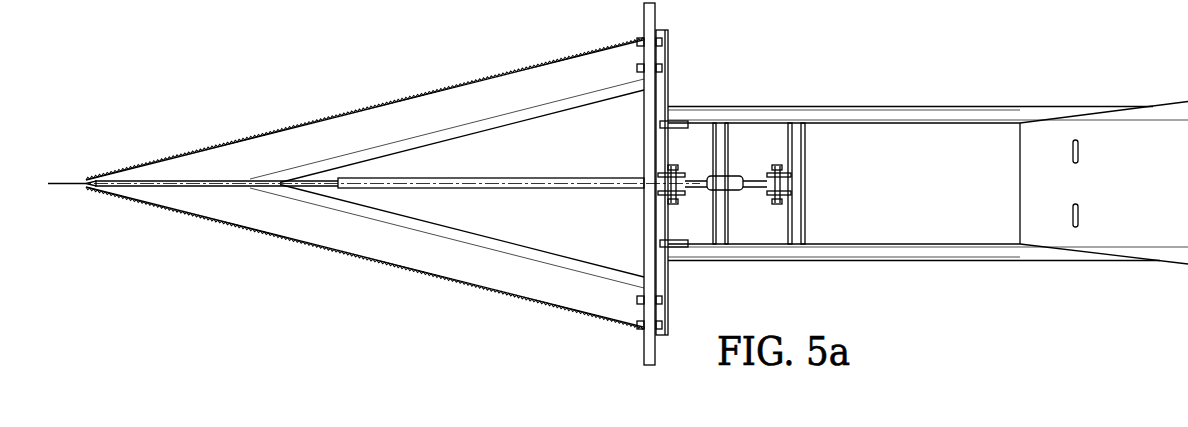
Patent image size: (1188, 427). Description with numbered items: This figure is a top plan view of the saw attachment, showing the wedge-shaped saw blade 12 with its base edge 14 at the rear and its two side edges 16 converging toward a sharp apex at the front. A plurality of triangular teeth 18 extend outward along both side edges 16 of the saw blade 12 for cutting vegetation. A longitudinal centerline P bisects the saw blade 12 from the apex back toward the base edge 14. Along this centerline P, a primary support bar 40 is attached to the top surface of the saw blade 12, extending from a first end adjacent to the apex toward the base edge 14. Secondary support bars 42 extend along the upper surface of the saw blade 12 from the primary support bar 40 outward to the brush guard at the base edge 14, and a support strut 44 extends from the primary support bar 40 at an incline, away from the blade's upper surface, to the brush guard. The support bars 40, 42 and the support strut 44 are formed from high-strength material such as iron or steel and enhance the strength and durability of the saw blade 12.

The longitudinal centerline P is at (62, 182).
The saw blade 12 is at (364, 183).
The base edge 14 is at (668, 305).
The side edges 16 is at (364, 183).
The teeth 18 is at (397, 101).
The primary support bar 40 is at (193, 181).
The secondary support bars 42 is at (580, 106).
The support strut 44 is at (540, 178).